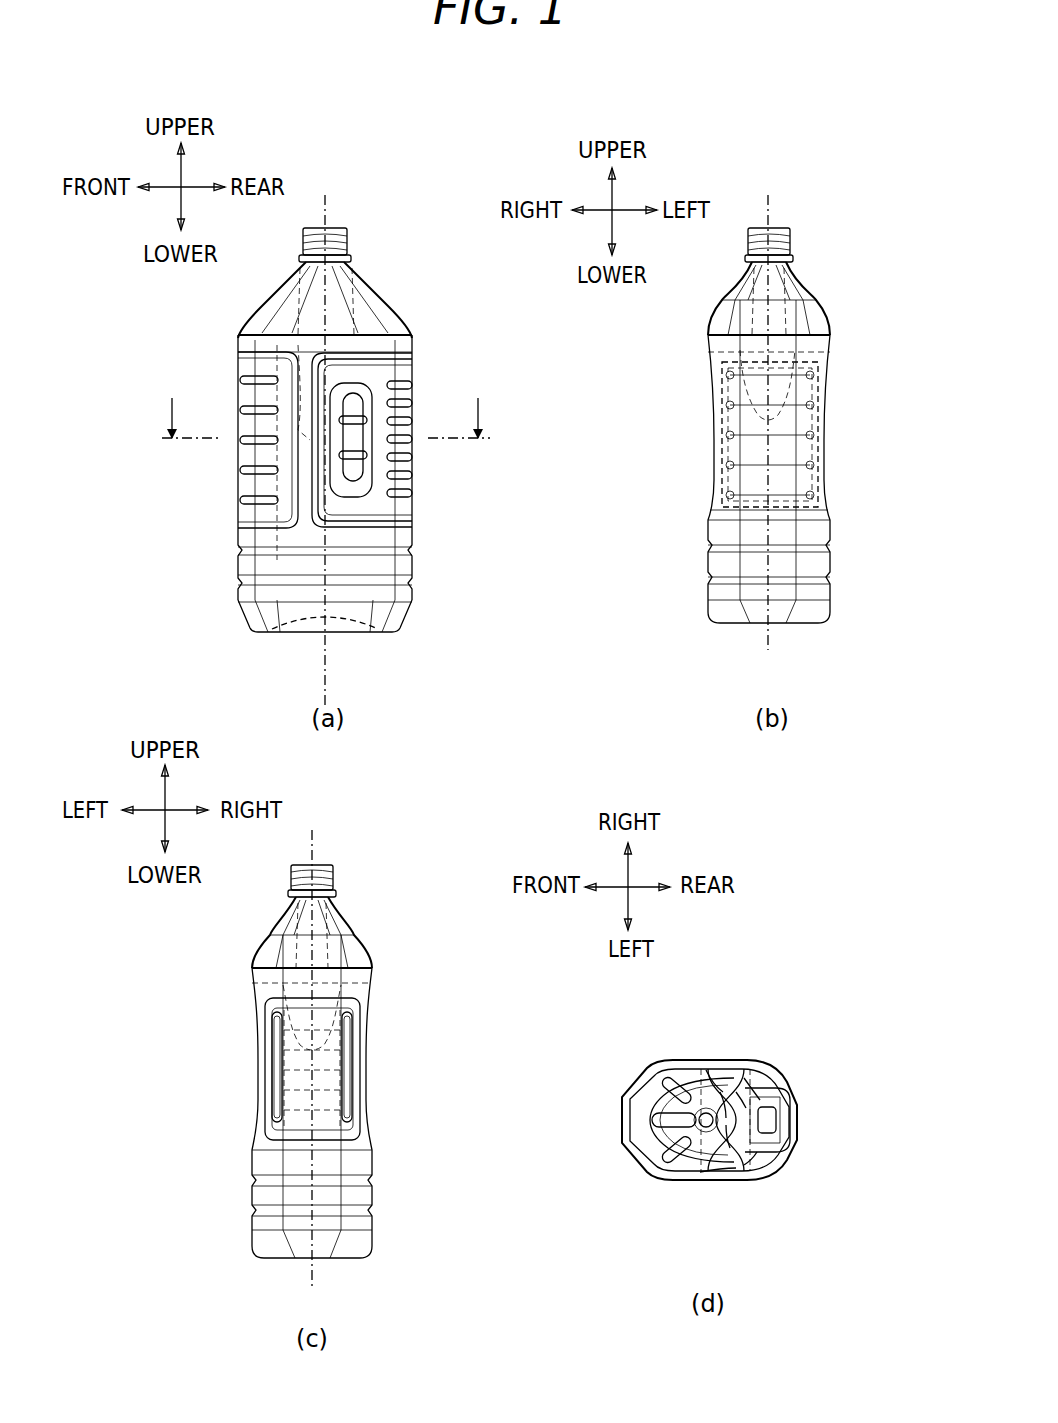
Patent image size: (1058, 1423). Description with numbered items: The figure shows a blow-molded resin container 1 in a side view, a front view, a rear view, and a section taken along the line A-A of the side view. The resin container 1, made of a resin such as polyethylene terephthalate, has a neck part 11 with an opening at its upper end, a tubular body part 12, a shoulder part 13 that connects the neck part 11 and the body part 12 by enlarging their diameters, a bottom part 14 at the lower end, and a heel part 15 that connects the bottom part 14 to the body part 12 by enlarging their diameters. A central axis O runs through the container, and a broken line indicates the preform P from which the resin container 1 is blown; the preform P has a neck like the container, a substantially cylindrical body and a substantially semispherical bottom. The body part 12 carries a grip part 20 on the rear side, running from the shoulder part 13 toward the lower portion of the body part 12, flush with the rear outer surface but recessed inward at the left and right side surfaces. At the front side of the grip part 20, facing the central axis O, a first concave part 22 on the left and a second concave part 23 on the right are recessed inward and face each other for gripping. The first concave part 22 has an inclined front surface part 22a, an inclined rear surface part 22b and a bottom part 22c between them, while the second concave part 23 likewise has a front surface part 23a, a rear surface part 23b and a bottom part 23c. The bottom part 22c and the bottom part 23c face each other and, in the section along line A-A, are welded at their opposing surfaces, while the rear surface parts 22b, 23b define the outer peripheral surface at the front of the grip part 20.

The resin container 1 is at (394, 252).
The neck part 11 is at (340, 230).
The body part 12 is at (386, 345).
The shoulder part 13 is at (374, 284).
The bottom part 14 is at (347, 630).
The heel part 15 is at (411, 606).
The grip part 20 is at (405, 465).
The first concave part 22 is at (360, 412).
The front surface part 22a is at (690, 1182).
The rear surface part 22b is at (757, 1168).
The bottom part 22c is at (740, 1160).
The second concave part 23 is at (732, 1097).
The front surface part 23a is at (712, 1090).
The rear surface part 23b is at (787, 1070).
The bottom part 23c is at (747, 1087).
The central axis O is at (323, 200).
The preform P is at (305, 345).
The line A- A is at (325, 416).